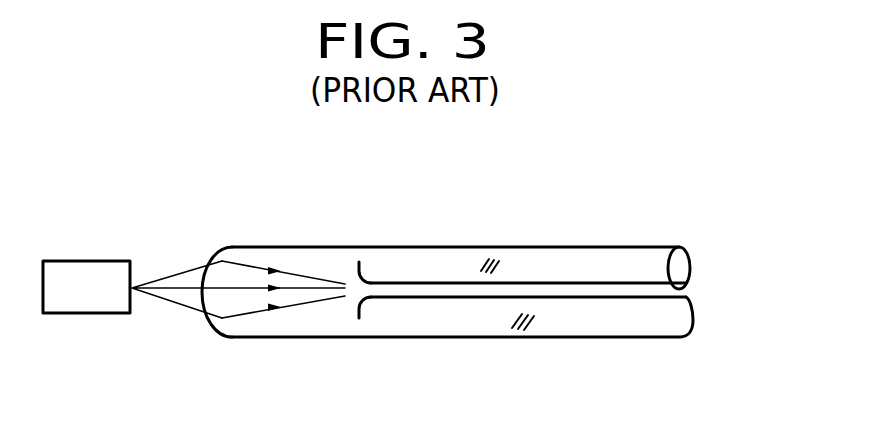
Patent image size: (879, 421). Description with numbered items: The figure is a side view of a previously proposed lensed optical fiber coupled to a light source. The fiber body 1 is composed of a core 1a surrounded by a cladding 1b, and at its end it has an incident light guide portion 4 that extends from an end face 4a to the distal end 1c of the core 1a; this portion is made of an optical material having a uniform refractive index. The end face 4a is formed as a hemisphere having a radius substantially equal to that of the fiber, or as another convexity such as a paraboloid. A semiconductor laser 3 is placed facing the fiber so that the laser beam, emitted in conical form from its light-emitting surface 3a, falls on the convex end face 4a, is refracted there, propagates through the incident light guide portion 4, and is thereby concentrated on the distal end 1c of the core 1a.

The fiber body 1 is at (573, 256).
The core 1a is at (656, 291).
The cladding 1b is at (656, 268).
The distal end of the core 1c is at (357, 260).
The semiconductor laser 3 is at (55, 316).
The light-emitting surface 3a is at (130, 288).
The incident light guide portion 4 is at (429, 242).
The end face 4a is at (205, 282).